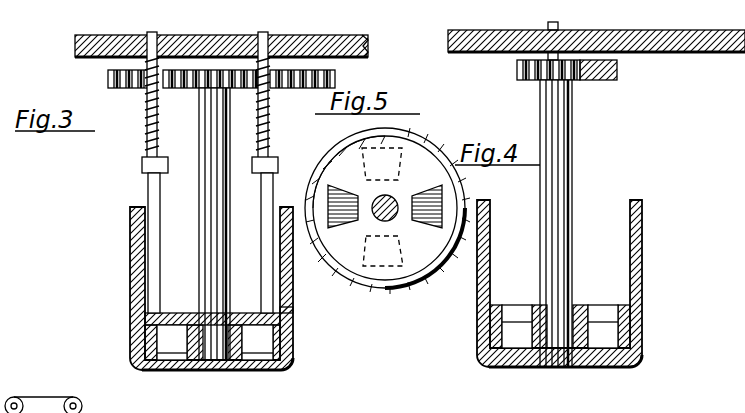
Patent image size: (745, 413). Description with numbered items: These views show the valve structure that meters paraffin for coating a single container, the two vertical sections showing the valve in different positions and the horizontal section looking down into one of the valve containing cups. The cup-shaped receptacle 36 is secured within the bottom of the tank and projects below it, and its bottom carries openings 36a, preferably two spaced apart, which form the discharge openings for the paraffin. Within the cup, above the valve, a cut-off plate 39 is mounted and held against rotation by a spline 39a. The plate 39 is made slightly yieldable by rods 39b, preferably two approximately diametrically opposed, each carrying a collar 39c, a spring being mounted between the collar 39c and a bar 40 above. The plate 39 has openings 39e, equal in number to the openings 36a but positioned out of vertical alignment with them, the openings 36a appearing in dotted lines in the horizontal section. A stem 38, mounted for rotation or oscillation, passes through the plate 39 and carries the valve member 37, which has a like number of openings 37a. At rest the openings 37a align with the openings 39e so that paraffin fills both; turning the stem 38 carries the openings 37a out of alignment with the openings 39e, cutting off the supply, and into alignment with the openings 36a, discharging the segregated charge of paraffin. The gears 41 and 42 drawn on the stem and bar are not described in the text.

In FIG. 3, the cup-shaped receptacle 36 is at (130, 270).
In FIG. 4, the cup-shaped receptacle 36 is at (643, 276).
In FIG. 3, the openings 36a is at (175, 365).
In FIG. 5, the openings 36a is at (402, 137).
In FIG. 3, the valve member 37 is at (294, 332).
In FIG. 3, the openings 37a is at (262, 345).
In FIG. 4, the openings 37a is at (605, 329).
In FIG. 3, the stem 38 is at (228, 292).
In FIG. 5, the stem 38 is at (395, 217).
In FIG. 4, the stem 38 is at (573, 154).
In FIG. 3, the cut-off plate 39 is at (145, 320).
In FIG. 4, the cut-off plate 39 is at (498, 306).
In FIG. 3, the spline 39a is at (316, 310).
In FIG. 3, the rods 39b is at (282, 176).
In FIG. 3, the collar 39c is at (288, 140).
In FIG. 5, the openings 39e is at (414, 194).
In FIG. 4, the openings 39e is at (600, 306).
In FIG. 3, the bar 40 is at (132, 34).
In FIG. 4, the bar 40 is at (520, 31).
In FIG. 3, the gear 41 is at (189, 90).
In FIG. 4, the gear 41 is at (524, 84).
In FIG. 3, the gear 42 is at (336, 76).
In FIG. 4, the gear 42 is at (606, 84).